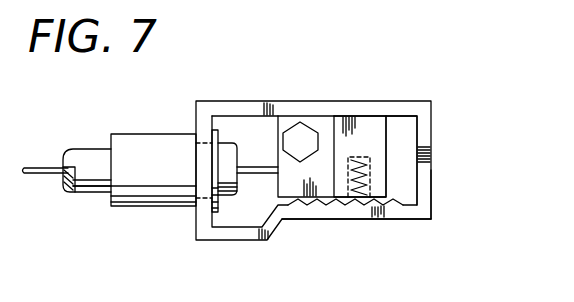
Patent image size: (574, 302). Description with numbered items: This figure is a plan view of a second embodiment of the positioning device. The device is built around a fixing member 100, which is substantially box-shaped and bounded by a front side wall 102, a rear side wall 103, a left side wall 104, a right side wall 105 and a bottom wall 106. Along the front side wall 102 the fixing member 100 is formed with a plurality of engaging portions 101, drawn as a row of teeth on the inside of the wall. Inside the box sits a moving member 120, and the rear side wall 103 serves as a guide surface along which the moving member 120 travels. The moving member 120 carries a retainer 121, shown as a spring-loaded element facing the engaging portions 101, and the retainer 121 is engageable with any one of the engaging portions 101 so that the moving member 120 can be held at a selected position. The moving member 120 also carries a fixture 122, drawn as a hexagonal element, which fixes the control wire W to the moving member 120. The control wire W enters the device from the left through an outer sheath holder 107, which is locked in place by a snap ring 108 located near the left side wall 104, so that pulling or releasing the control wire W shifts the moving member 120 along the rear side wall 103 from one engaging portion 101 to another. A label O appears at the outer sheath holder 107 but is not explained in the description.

The control wire W is at (38, 178).
The O-ring O is at (91, 188).
The fixing member 100 is at (433, 143).
The engaging portions 101 is at (343, 204).
The front side wall 102 is at (288, 219).
The rear side wall 103 is at (327, 102).
The left side wall 104 is at (196, 128).
The right side wall 105 is at (431, 190).
The bottom wall 106 is at (403, 128).
The outer sheath holder 107 is at (133, 207).
The snap ring 108 is at (215, 213).
The moving member 120 is at (365, 118).
The retainer 121 is at (360, 200).
The fixture 122 is at (298, 121).